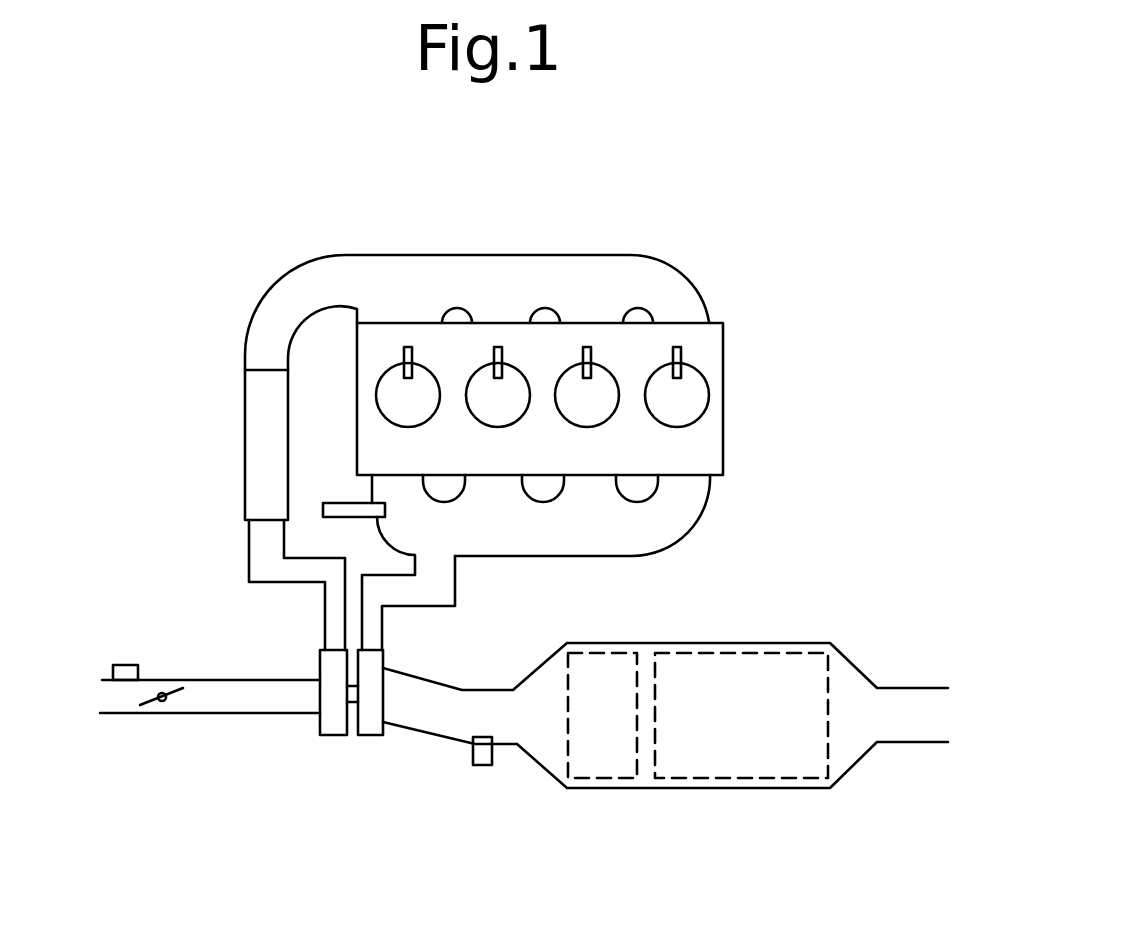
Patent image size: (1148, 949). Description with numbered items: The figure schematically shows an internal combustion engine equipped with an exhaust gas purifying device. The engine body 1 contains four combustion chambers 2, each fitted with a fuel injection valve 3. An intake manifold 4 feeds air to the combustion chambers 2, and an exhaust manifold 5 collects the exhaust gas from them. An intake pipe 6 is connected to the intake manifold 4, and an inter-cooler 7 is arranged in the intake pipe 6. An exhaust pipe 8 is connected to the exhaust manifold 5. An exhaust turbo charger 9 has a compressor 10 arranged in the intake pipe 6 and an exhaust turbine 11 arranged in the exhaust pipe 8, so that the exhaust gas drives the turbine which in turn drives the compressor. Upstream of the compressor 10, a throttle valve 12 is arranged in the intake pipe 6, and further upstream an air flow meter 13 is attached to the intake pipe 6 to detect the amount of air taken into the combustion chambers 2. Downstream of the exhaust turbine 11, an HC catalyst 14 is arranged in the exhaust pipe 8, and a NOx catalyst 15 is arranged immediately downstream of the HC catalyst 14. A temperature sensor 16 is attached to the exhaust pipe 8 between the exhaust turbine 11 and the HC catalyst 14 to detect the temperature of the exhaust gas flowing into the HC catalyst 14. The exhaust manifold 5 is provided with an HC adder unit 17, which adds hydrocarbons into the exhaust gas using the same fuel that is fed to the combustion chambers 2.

The body of an internal combustion engine 1 is at (750, 374).
The combustion chambers 2 is at (702, 440).
The fuel injection valves 3 is at (701, 342).
The intake manifold 4 is at (565, 268).
The exhaust manifold 5 is at (622, 528).
The intake pipe 6 is at (268, 332).
The inter-cooler 7 is at (256, 444).
The exhaust pipe 8 is at (425, 588).
The exhaust turbo charger 9 is at (348, 766).
The compressor 10 is at (333, 736).
The exhaust turbine 11 is at (373, 736).
The throttle valve 12 is at (157, 712).
The air flow meter 13 is at (125, 665).
The HC catalyst 14 is at (600, 778).
The NOx catalyst 15 is at (740, 778).
The temperature sensor 16 is at (480, 765).
The HC adder unit 17 is at (343, 500).